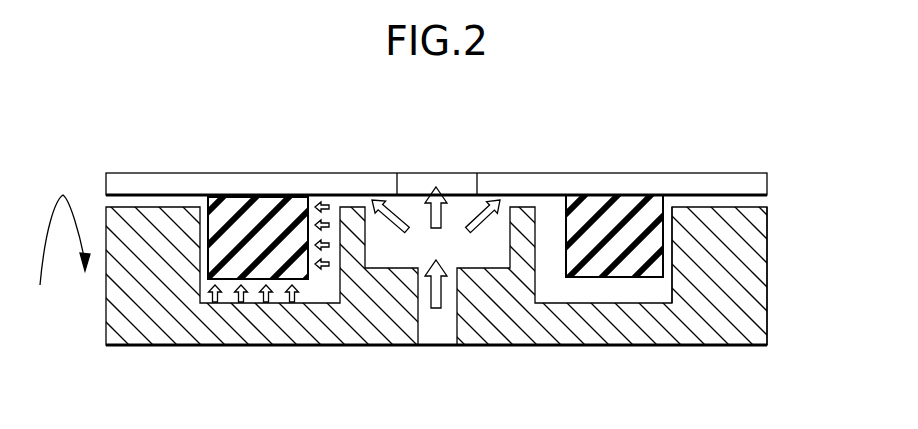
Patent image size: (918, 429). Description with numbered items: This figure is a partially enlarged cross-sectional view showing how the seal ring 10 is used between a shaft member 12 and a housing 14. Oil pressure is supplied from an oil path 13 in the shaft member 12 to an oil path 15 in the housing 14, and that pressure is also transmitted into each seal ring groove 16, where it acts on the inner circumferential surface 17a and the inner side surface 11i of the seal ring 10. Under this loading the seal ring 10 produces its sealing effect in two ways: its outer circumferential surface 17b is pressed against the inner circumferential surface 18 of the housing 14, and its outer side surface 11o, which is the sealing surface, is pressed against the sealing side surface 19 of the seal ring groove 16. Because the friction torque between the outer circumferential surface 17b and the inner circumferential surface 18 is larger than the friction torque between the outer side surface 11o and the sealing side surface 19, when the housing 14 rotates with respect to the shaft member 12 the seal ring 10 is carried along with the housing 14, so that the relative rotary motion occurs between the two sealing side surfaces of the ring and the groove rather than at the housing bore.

The seal ring 10 is at (603, 250).
The inner side surface 11i is at (551, 216).
The outer side surface 11o is at (686, 196).
The shaft member 12 is at (182, 297).
The oil path 13 is at (435, 323).
The housing 14 is at (173, 185).
The oil path 15 is at (458, 181).
The seal ring groove 16 is at (325, 295).
The inner circumferential surface 17a is at (653, 272).
The outer circumferential surface 17b is at (628, 203).
The inner circumferential surface 18 is at (740, 206).
The sealing side surface 19 is at (673, 251).